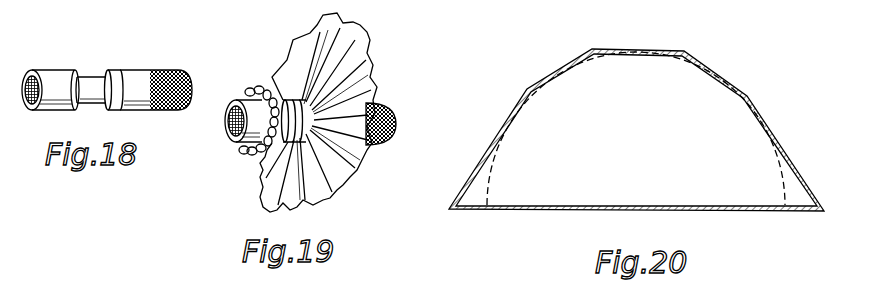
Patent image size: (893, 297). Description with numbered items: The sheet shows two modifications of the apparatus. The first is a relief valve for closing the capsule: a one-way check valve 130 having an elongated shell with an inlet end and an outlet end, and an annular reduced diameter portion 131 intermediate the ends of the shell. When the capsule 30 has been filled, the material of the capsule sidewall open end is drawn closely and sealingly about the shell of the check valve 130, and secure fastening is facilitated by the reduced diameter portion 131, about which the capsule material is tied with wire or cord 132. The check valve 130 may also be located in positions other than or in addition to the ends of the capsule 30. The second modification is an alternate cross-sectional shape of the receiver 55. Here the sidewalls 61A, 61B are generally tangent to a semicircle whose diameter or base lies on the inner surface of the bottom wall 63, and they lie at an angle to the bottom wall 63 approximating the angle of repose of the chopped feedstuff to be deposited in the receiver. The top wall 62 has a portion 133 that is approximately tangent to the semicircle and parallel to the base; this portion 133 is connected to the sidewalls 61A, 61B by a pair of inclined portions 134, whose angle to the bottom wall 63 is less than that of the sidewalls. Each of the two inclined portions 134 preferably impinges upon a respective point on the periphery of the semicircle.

In FIG. 18, the one-way check valve 130 is at (127, 70).
In FIG. 19, the one-way check valve 130 is at (232, 138).
In FIG. 18, the annular reduced diameter portion 131 is at (90, 76).
In FIG. 19, the wire or cord 132 is at (277, 96).
In FIG. 19, the capsule 30 is at (367, 50).
In FIG. 20, the receiver 55 is at (765, 115).
In FIG. 20, the sidewall 61A is at (497, 136).
In FIG. 20, the sidewall 61B is at (770, 130).
In FIG. 20, the top wall 62 is at (690, 52).
In FIG. 20, the bottom wall 63 is at (565, 209).
In FIG. 20, the top wall portion 133 is at (634, 50).
In FIG. 20, the inclined portions 134 is at (562, 72).